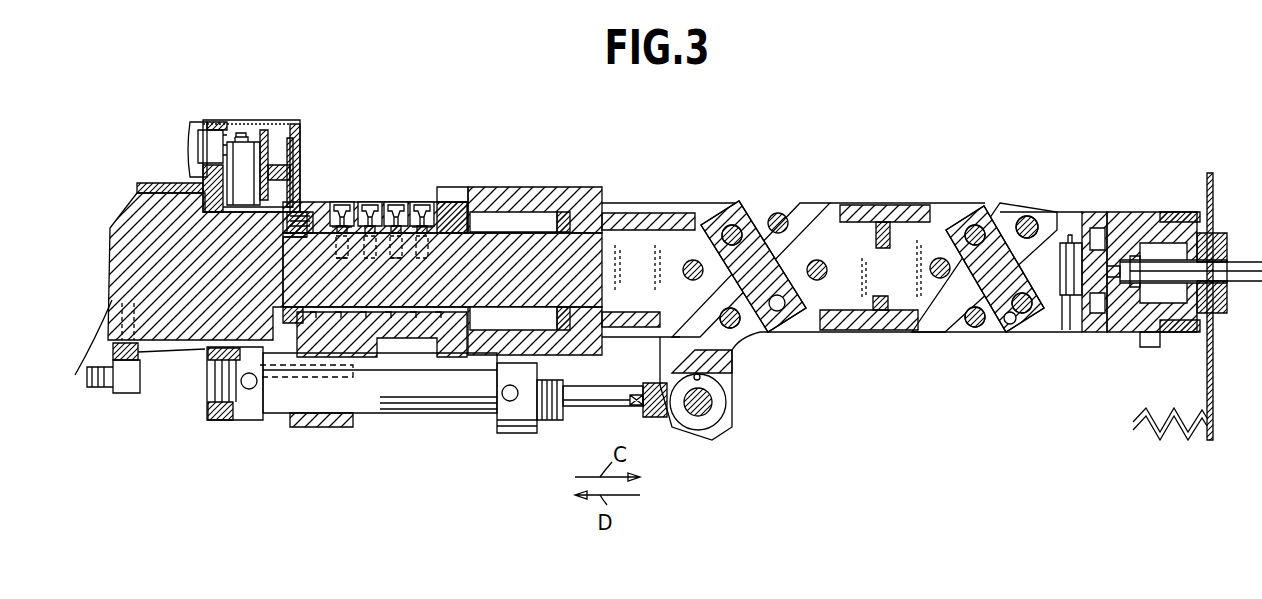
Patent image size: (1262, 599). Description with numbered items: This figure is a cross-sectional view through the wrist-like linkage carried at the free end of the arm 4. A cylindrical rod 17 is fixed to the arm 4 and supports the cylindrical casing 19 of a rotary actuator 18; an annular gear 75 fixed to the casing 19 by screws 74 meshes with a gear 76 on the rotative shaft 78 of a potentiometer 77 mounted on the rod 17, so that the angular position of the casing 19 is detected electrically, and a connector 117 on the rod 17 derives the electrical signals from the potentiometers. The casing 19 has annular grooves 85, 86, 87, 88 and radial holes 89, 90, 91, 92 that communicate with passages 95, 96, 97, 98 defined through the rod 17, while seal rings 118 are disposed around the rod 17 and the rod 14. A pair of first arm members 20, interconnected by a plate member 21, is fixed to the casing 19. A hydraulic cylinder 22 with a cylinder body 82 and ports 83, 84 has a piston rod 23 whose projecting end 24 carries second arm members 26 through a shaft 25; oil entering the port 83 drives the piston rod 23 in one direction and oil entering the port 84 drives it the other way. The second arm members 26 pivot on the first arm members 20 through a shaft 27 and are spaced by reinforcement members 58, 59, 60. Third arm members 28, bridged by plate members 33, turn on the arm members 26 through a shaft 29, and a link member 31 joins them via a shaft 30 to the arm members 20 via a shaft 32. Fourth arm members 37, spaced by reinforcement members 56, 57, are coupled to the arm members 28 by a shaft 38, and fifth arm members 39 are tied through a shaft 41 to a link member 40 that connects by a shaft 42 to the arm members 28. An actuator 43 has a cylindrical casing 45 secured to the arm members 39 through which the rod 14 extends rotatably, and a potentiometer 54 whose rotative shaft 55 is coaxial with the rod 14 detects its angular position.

The arm 4 is at (161, 357).
The rod 14 is at (1245, 280).
The cylindrical rod 17 is at (500, 248).
The rotary actuator 18 is at (523, 184).
The cylindrical casing 19 is at (563, 190).
The first arm members 20 is at (630, 203).
The plate member 21 is at (633, 328).
The hydraulic cylinder 22 is at (440, 418).
The piston rod 23 is at (590, 418).
The projecting end 24 is at (700, 425).
The shaft 25 is at (705, 402).
The second arm members 26 is at (798, 217).
The shaft 27 is at (693, 260).
The third arm members 28 is at (930, 332).
The shaft 29 is at (818, 260).
The shaft 30 is at (780, 310).
The link member 31 is at (770, 332).
The shaft 32 is at (734, 202).
The plate members 33 is at (867, 330).
The fourth arm members 37 is at (1012, 215).
The shaft 38 is at (943, 258).
The fifth arm members 39 is at (1073, 297).
The link member 40 is at (1003, 327).
The shaft 41 is at (1030, 320).
The shaft 42 is at (980, 223).
The actuator 43 is at (1192, 174).
The cylindrical casing 45 is at (1143, 212).
The potentiometer 54 is at (1084, 332).
The rotative shaft 55 is at (1123, 332).
The reinforcement member 56 is at (973, 330).
The reinforcement member 57 is at (1037, 212).
The reinforcement member 58 is at (778, 213).
The reinforcement member 59 is at (720, 313).
The reinforcement member 60 is at (727, 370).
The screws 74 is at (307, 231).
The annular gear 75 is at (300, 226).
The gear 76 is at (280, 160).
The potentiometer 77 is at (247, 163).
The rotative shaft 78 is at (300, 162).
The cylinder body 82 is at (400, 410).
The port 83 is at (250, 389).
The port 84 is at (512, 400).
The annular groove 85 is at (337, 257).
The annular groove 86 is at (377, 235).
The annular groove 87 is at (405, 235).
The annular groove 88 is at (418, 237).
The radial hole 89 is at (340, 217).
The radial hole 90 is at (370, 217).
The radial hole 91 is at (398, 210).
The radial hole 92 is at (422, 217).
The passage 95 is at (338, 233).
The passage 96 is at (332, 250).
The passage 97 is at (403, 250).
The passage 98 is at (437, 235).
The connector 117 is at (192, 137).
The seal rings 118 is at (1223, 255).